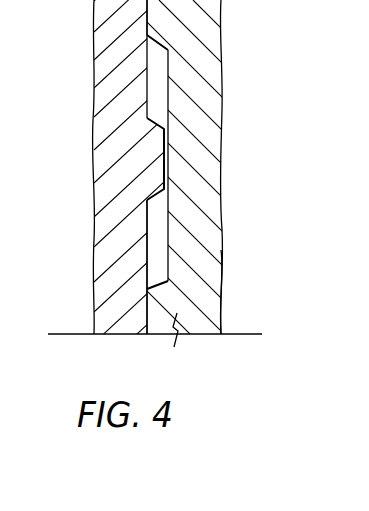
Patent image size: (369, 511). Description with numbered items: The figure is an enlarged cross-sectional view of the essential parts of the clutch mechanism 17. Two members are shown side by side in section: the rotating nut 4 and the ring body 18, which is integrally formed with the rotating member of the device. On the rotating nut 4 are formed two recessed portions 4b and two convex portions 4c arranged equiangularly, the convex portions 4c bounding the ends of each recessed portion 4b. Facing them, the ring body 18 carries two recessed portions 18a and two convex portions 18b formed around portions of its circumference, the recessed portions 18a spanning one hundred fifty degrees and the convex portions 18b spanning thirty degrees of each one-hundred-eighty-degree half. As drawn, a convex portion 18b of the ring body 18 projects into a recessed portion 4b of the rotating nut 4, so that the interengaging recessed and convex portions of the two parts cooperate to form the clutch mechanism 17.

The rotating nut 4 is at (195, 120).
The recessed portion 4b is at (168, 68).
The convex portion 4c is at (158, 55).
The clutch mechanism 17 is at (226, 281).
The ring body 18 is at (112, 298).
The recessed portion 18a is at (147, 238).
The convex portion 18b is at (165, 150).